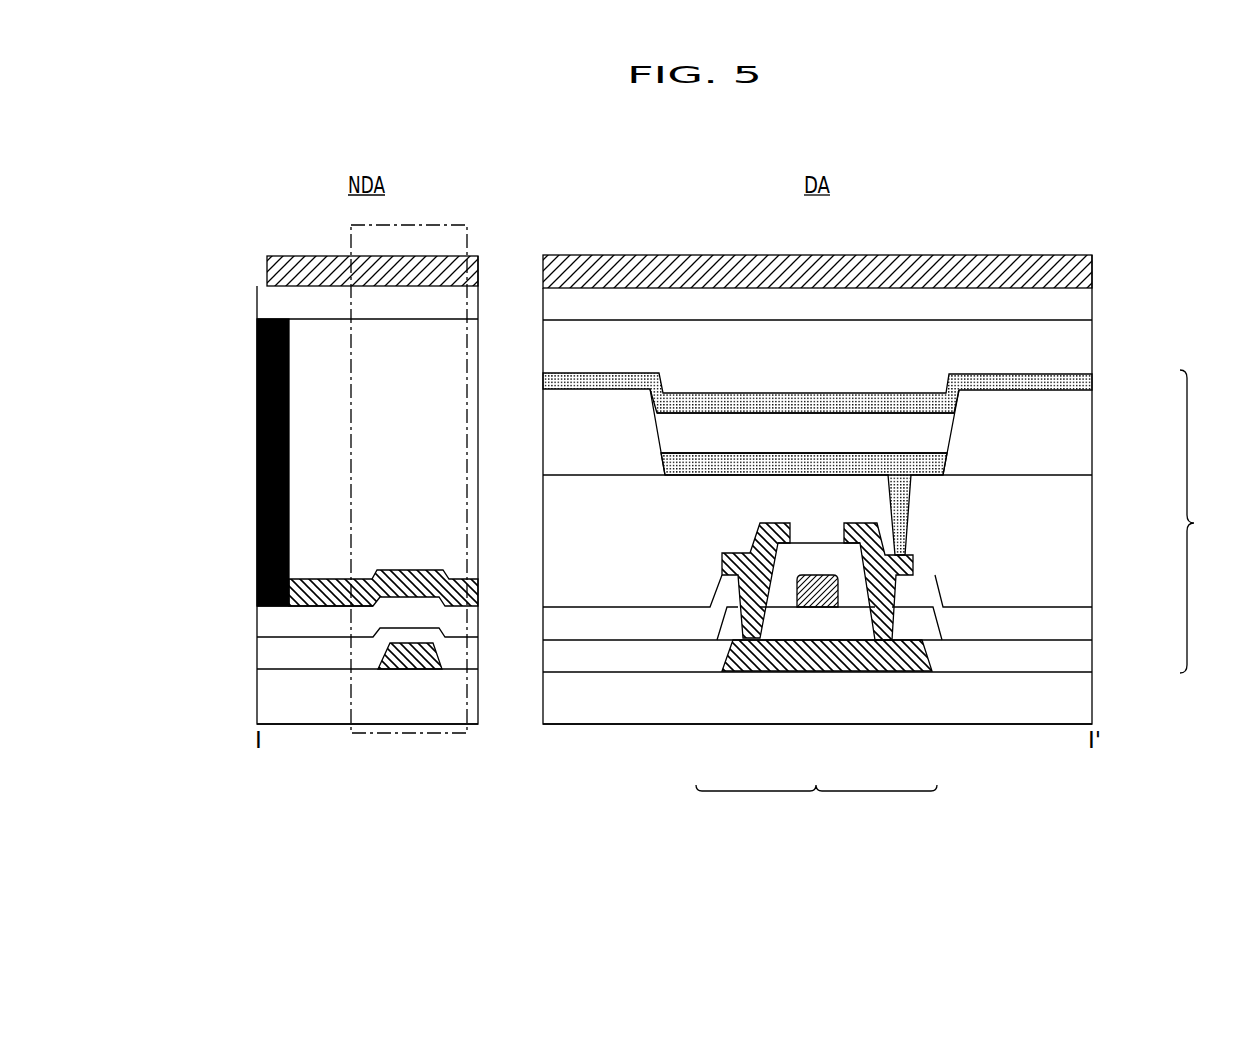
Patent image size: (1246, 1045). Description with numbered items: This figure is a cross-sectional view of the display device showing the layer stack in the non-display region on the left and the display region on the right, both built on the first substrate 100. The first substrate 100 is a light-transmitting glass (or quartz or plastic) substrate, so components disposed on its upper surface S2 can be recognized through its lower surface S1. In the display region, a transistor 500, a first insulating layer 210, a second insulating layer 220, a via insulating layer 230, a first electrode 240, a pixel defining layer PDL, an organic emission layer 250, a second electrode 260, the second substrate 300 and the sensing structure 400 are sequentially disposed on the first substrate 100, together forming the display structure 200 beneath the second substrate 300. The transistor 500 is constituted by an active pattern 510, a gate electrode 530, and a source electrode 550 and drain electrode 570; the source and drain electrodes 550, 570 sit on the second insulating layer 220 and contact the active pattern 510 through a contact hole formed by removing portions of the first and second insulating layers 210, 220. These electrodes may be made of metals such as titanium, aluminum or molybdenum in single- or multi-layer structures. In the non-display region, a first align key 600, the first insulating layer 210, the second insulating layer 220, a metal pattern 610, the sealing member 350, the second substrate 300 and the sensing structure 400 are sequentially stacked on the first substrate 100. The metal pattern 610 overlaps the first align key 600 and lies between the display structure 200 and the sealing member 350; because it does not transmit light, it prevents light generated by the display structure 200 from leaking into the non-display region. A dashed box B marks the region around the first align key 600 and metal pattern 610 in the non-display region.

The first substrate 100 is at (257, 694).
The display structure 200 is at (886, 521).
The first insulating layer 210 is at (257, 652).
The second insulating layer 220 is at (257, 619).
The via insulating layer 230 is at (1092, 540).
The first electrode 240 is at (930, 463).
The organic emission layer 250 is at (945, 433).
The second electrode 260 is at (1092, 383).
The pixel defining layer PDL is at (1092, 407).
The second substrate 300 is at (257, 304).
The sealing member 350 is at (257, 460).
The sensing structure 400 is at (267, 270).
The transistor 500 is at (816, 674).
The active pattern 510 is at (852, 660).
The gate electrode 530 is at (817, 600).
The source electrode 550 is at (745, 620).
The drain electrode 570 is at (888, 625).
The first align key 600 is at (413, 670).
The metal pattern 610 is at (410, 578).
The region B is at (351, 236).
The lower surface S1 is at (281, 724).
The upper surface S2 is at (323, 670).